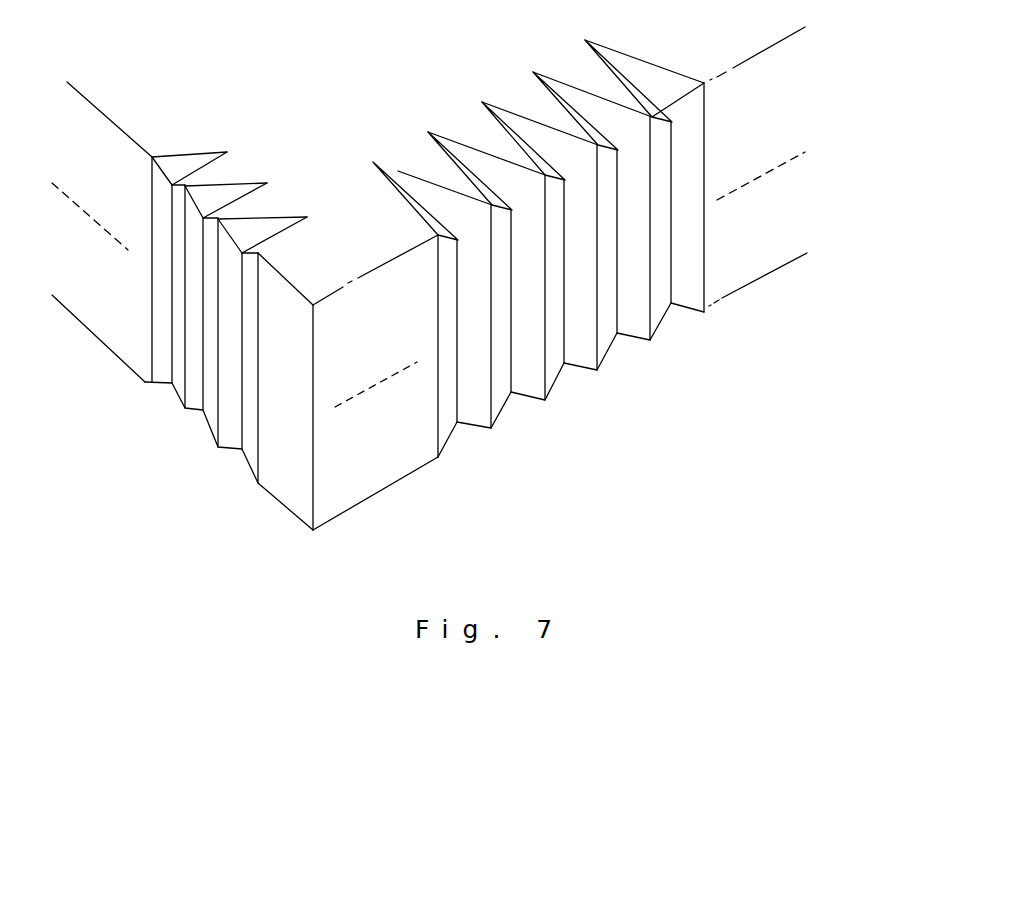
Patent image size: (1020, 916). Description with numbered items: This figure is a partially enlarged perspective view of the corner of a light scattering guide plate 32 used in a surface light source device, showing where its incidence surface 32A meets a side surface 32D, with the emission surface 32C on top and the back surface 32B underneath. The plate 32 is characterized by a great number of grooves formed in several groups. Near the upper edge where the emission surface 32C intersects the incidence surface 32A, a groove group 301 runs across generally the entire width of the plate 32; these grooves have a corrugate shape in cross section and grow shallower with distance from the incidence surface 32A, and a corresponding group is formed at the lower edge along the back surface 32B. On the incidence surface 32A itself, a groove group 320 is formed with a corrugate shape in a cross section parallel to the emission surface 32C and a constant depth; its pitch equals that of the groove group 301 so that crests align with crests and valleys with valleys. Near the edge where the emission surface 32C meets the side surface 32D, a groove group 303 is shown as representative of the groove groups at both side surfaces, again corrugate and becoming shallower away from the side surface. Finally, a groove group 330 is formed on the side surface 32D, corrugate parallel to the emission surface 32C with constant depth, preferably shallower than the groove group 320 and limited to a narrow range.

The light scattering guide plate 32 is at (632, 357).
The incidence surface 32A is at (747, 142).
The back surface 32B is at (445, 472).
The emission surface 32C is at (378, 104).
The side surface 32D is at (127, 208).
The grooves 301 is at (605, 130).
The groove group 303 is at (185, 167).
The grooves 320 is at (567, 337).
The grooves 330 is at (207, 377).